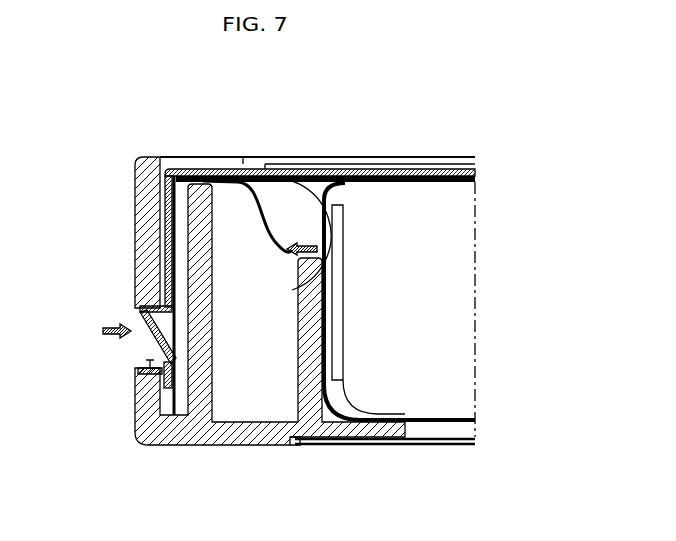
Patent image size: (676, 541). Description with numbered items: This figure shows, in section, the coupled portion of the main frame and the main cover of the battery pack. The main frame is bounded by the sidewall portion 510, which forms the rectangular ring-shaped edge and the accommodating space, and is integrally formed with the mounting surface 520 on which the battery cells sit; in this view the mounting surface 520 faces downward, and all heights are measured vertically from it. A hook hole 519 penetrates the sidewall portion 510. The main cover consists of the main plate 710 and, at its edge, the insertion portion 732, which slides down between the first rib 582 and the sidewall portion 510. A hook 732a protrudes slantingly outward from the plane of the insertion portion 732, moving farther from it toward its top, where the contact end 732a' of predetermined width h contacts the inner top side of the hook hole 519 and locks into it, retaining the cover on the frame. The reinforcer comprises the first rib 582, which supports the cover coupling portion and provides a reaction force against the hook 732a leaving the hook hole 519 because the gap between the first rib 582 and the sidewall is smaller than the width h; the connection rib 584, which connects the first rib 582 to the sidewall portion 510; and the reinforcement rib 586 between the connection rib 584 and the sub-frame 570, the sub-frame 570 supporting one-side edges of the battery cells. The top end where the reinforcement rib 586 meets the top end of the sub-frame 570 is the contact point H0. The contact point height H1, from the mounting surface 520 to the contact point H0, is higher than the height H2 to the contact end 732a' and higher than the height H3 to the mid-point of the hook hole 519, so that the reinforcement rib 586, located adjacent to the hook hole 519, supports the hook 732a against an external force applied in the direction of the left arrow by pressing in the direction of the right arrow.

The sidewall portion 510 is at (136, 158).
The mounting surface 520 is at (272, 440).
The hook hole 519 is at (137, 390).
The first rib 582 is at (202, 169).
The reinforcement rib 586 is at (300, 186).
The sub-frame 570 is at (359, 186).
The main plate 710 is at (428, 169).
The connection rib 584 is at (350, 440).
The insertion portion 732 is at (167, 210).
The hook 732a is at (194, 422).
The contact end 732a' is at (240, 447).
The contact point H0 is at (280, 304).
The contact point height H1 is at (285, 258).
The height H2 is at (137, 306).
The height H3 is at (163, 353).
The width h is at (140, 448).